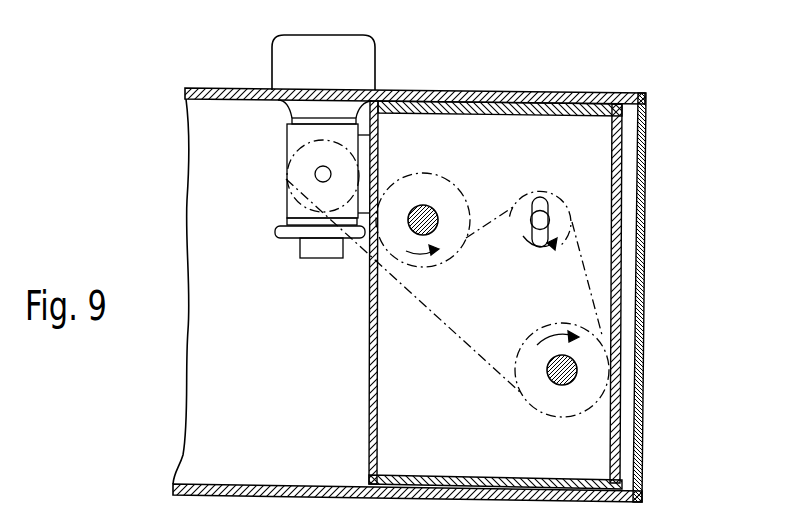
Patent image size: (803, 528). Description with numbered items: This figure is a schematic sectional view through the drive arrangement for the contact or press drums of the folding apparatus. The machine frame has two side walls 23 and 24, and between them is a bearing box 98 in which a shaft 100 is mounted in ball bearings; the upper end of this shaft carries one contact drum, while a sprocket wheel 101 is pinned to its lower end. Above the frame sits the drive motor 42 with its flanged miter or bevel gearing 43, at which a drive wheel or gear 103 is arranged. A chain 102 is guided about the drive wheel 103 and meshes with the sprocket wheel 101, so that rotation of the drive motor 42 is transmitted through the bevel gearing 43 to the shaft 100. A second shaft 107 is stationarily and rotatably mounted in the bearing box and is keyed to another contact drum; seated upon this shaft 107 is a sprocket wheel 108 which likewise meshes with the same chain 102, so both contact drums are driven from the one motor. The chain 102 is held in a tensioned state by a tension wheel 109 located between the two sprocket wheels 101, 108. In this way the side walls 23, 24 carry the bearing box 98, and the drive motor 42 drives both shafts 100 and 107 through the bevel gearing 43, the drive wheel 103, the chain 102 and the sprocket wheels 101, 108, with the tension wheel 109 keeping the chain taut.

The side wall 23 is at (455, 92).
The side wall 24 is at (276, 484).
The drive motor 42 is at (366, 54).
The miter or bevel gearing 43 is at (290, 139).
The bearing box 98 is at (627, 258).
The shaft 100 is at (436, 212).
The sprocket wheel 101 is at (423, 182).
The chain 102 is at (489, 226).
The drive wheel or gear 103 is at (302, 183).
The shaft 107 is at (578, 369).
The sprocket wheel 108 is at (584, 399).
The tension wheel 109 is at (558, 246).